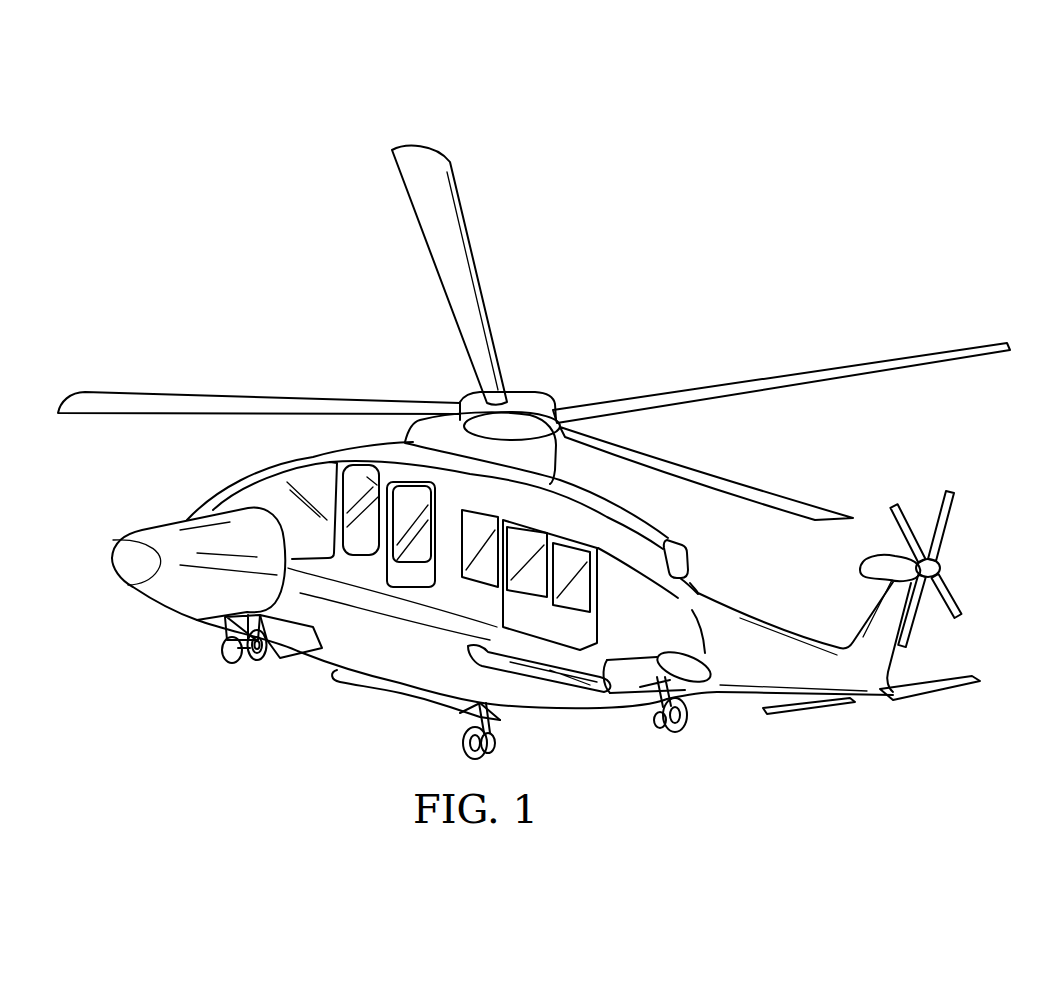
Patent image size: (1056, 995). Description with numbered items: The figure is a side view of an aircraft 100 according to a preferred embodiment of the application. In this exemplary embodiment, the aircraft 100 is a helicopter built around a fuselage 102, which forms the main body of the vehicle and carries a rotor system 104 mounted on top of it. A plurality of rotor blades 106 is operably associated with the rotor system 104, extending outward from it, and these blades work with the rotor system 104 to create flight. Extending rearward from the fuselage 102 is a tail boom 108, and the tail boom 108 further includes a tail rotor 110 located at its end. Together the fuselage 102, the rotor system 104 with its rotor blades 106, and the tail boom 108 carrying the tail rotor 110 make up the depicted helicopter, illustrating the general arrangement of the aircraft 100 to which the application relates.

The aircraft 100 is at (201, 129).
The fuselage 102 is at (332, 660).
The rotor system 104 is at (550, 356).
The rotor blades 106 is at (767, 389).
The tail boom 108 is at (740, 684).
The tail rotor 110 is at (943, 538).